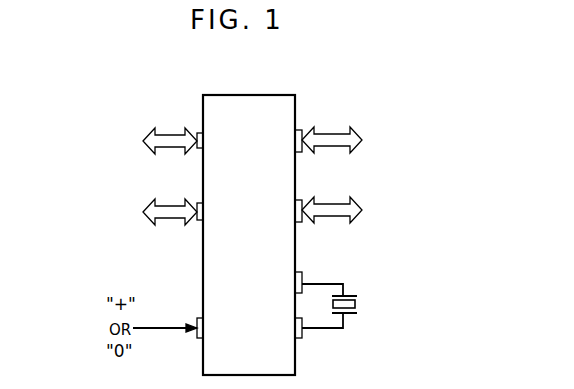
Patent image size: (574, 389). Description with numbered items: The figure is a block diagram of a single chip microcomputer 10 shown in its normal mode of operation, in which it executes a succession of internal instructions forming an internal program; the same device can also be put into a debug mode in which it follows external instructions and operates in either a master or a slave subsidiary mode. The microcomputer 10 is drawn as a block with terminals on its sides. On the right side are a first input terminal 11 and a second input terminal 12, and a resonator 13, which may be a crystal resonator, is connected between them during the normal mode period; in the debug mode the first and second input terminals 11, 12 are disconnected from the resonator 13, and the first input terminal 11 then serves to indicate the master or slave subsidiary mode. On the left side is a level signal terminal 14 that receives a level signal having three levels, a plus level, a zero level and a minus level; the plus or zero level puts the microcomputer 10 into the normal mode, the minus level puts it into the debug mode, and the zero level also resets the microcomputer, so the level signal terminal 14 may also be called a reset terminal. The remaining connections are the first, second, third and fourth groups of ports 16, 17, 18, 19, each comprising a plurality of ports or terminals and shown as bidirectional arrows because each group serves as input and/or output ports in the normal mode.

The single chip microcomputer 10 is at (291, 86).
The first input terminal 11 is at (301, 338).
The second input terminal 12 is at (301, 276).
The resonator 13 is at (359, 305).
The level signal terminal 14 is at (198, 318).
The first group of ports 16 is at (300, 201).
The second group of ports 17 is at (300, 130).
The third group of ports 18 is at (199, 203).
The fourth group of ports 19 is at (198, 133).